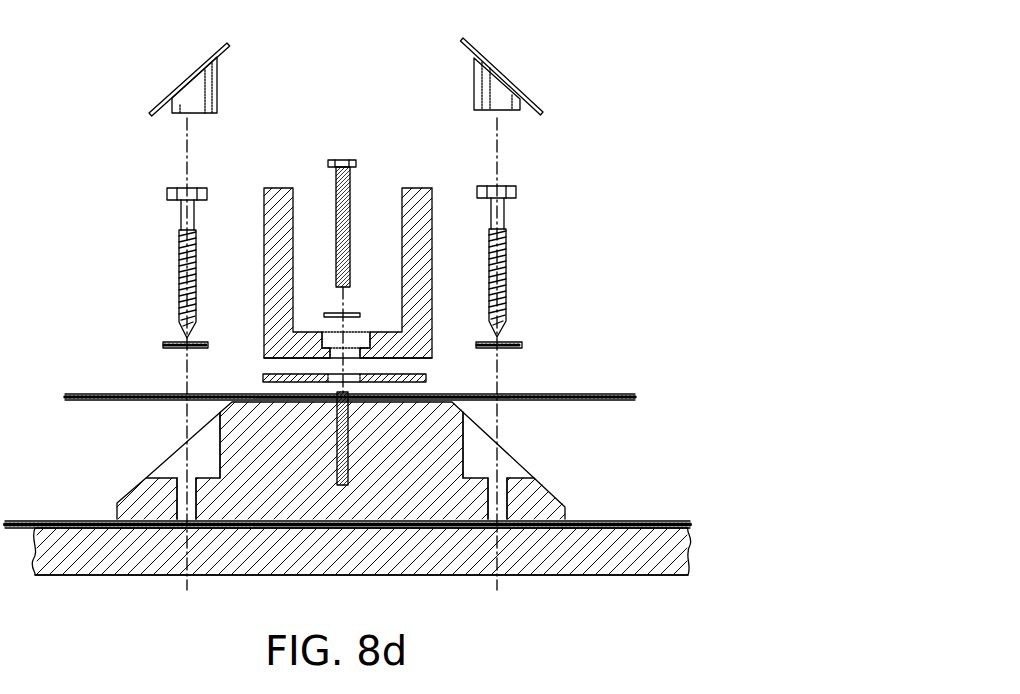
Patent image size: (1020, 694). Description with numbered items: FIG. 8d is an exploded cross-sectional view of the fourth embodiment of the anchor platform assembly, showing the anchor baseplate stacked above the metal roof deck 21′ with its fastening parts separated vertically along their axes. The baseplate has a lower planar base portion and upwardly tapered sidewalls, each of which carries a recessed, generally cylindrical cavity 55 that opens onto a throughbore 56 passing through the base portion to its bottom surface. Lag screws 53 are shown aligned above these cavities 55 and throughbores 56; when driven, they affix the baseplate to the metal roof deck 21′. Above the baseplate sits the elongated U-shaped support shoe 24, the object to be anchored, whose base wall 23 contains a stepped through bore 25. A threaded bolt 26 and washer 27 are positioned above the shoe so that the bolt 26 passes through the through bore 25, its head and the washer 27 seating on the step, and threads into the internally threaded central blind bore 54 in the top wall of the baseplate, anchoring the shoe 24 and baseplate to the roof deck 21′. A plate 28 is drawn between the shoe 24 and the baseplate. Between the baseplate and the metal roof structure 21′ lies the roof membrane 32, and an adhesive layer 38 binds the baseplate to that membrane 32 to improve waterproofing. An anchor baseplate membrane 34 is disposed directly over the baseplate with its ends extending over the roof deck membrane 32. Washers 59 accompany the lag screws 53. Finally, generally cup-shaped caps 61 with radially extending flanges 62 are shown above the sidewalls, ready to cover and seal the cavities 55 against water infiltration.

The metal roof deck 21′ is at (606, 576).
The base wall 23 is at (285, 350).
The U-shaped shoe 24 is at (430, 215).
The through bore 25 is at (356, 338).
The threaded bolt 26 is at (350, 190).
The washer 27 is at (350, 313).
The plate 28 is at (408, 378).
The roof membrane 32 is at (667, 528).
The anchor baseplate membrane 34 is at (587, 395).
The adhesive layer 38 is at (107, 520).
The lag screw 53 is at (182, 215).
The blind bore 54 is at (348, 457).
The cavity 55 is at (220, 447).
The throughbore 56 is at (192, 507).
The washer 59 is at (172, 341).
The cup-shaped cap 61 is at (218, 76).
The radially-extending flange 62 is at (226, 45).